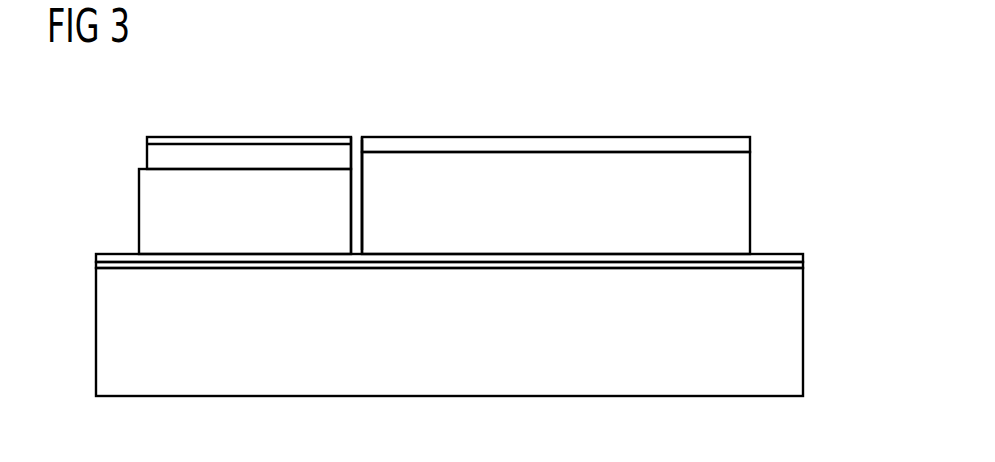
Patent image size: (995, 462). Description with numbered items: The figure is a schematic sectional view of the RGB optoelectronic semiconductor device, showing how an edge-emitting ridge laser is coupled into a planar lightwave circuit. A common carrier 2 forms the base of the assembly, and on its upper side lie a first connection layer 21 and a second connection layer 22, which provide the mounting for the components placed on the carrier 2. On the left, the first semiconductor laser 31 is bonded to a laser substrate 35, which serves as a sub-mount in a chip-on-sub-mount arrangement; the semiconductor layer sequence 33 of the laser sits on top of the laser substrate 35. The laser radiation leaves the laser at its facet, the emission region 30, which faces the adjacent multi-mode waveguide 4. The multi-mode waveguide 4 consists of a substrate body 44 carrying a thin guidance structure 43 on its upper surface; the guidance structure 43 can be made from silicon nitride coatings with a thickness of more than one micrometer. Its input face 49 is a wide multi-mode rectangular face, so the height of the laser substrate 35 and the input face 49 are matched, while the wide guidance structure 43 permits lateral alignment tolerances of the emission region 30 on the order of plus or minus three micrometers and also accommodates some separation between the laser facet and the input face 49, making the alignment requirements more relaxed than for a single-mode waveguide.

The carrier 2 is at (433, 364).
The first connection layer 21 is at (98, 262).
The second connection layer 22 is at (802, 258).
The first semiconductor laser 31 is at (223, 148).
The semiconductor layer sequence 33 is at (147, 141).
The laser substrate 35 is at (148, 216).
The emission region 30 is at (354, 135).
The input face 49 is at (363, 147).
The multi-mode waveguide (PLC) 4 is at (600, 186).
The guidance structure 43 is at (733, 145).
The substrate body 44 is at (733, 178).